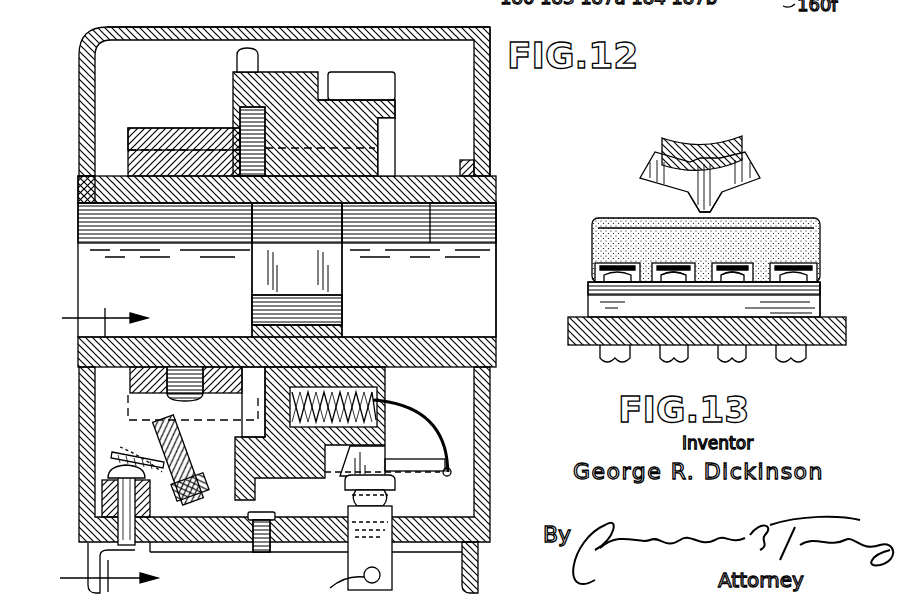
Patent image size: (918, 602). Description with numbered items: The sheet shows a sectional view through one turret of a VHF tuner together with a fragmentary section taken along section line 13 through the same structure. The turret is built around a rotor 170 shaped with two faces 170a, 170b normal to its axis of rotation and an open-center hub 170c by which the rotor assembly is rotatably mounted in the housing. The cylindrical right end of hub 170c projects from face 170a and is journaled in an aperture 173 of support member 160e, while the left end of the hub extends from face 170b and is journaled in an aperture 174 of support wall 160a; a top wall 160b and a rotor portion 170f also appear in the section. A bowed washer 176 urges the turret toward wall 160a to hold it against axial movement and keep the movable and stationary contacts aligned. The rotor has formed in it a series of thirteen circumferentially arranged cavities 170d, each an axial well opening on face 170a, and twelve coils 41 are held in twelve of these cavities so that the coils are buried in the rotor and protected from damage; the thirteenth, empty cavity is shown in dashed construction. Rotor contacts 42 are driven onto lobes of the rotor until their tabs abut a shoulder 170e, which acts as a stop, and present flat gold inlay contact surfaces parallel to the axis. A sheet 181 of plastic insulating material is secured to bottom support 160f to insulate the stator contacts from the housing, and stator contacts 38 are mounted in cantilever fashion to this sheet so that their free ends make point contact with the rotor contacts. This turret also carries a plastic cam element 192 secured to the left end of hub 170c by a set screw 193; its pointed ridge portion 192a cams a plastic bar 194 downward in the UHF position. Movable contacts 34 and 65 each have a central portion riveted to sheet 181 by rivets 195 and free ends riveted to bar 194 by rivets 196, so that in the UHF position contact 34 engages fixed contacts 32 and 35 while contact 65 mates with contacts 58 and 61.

In FIG. 12, the section line 13 is at (90, 450).
In FIG. 12, the fixed contact 32 is at (115, 472).
In FIG. 13, the fixed contact 32 is at (685, 278).
In FIG. 12, the movable contact 34 is at (125, 438).
In FIG. 13, the movable contact 34 is at (747, 263).
In FIG. 13, the fixed contact 35 is at (732, 278).
In FIG. 12, the stator contact 38 is at (392, 486).
In FIG. 12, the coil 41 is at (378, 396).
In FIG. 12, the movable contact 42 is at (387, 460).
In FIG. 13, the fixed contact 58 is at (620, 281).
In FIG. 13, the fixed contact 61 is at (800, 282).
In FIG. 13, the movable contact 65 is at (612, 262).
In FIG. 12, the support wall 160a is at (80, 92).
In FIG. 12, the housing wall 160b is at (230, 27).
In FIG. 12, the support member 160e is at (490, 92).
In FIG. 12, the bottom support 160f is at (212, 545).
In FIG. 12, the rotor 170 is at (283, 78).
In FIG. 12, the rotor face 170a is at (378, 168).
In FIG. 12, the rotor face 170b is at (240, 115).
In FIG. 12, the open-center hub 170c is at (120, 170).
In FIG. 13, the open-center hub 170c is at (737, 140).
In FIG. 12, the cavity 170d is at (398, 131).
In FIG. 12, the shoulder 170e is at (333, 462).
In FIG. 12, the rotor portion 170f is at (250, 45).
In FIG. 12, the aperture 173 is at (492, 222).
In FIG. 12, the aperture 174 is at (78, 217).
In FIG. 12, the bowed washer 176 is at (475, 162).
In FIG. 12, the insulating sheet 181 is at (490, 520).
In FIG. 13, the insulating sheet 181 is at (830, 346).
In FIG. 12, the cam element 192 is at (125, 152).
In FIG. 13, the cam element 192 is at (758, 172).
In FIG. 12, the pointed ridge portion 192a is at (168, 128).
In FIG. 13, the pointed ridge portion 192a is at (716, 210).
In FIG. 12, the set screw 193 is at (183, 368).
In FIG. 12, the plastic bar 194 is at (128, 413).
In FIG. 13, the plastic bar 194 is at (620, 237).
In FIG. 12, the rivet 195 is at (258, 548).
In FIG. 12, the rivet 196 is at (102, 505).